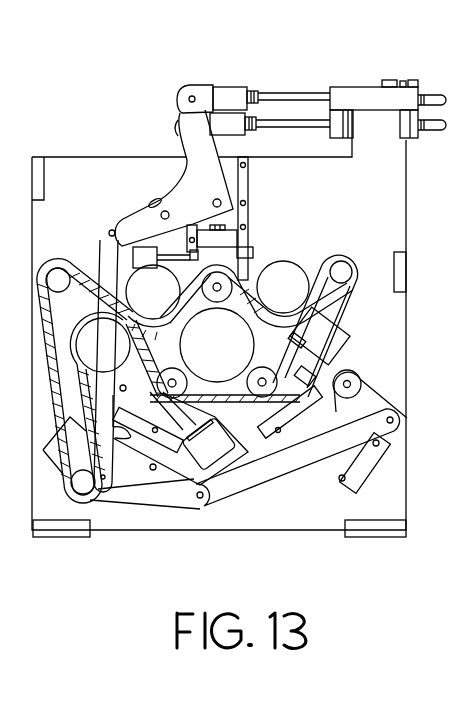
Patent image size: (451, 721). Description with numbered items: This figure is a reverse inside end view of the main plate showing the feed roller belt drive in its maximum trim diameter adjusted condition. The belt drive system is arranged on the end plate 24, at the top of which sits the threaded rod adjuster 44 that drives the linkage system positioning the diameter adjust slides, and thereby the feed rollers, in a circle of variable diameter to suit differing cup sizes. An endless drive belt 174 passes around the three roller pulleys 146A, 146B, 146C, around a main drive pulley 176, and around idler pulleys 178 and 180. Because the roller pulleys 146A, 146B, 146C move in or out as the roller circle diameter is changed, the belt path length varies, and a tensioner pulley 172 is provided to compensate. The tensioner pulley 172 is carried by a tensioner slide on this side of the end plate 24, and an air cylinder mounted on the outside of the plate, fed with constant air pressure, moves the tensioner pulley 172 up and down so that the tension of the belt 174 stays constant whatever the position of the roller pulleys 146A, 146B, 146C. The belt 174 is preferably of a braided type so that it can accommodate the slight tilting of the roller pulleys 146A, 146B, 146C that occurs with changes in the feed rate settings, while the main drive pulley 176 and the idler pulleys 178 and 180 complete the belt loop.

The end plate 24 is at (362, 190).
The threaded rod adjuster 44 is at (362, 49).
The roller pulley 146A is at (221, 281).
The roller pulley 146B is at (255, 392).
The roller pulley 146C is at (171, 372).
The tensioner pulley 172 is at (60, 272).
The endless drive belt 174 is at (81, 266).
The main drive pulley 176 is at (88, 492).
The idler pulley 178 is at (160, 307).
The idler pulley 180 is at (345, 266).